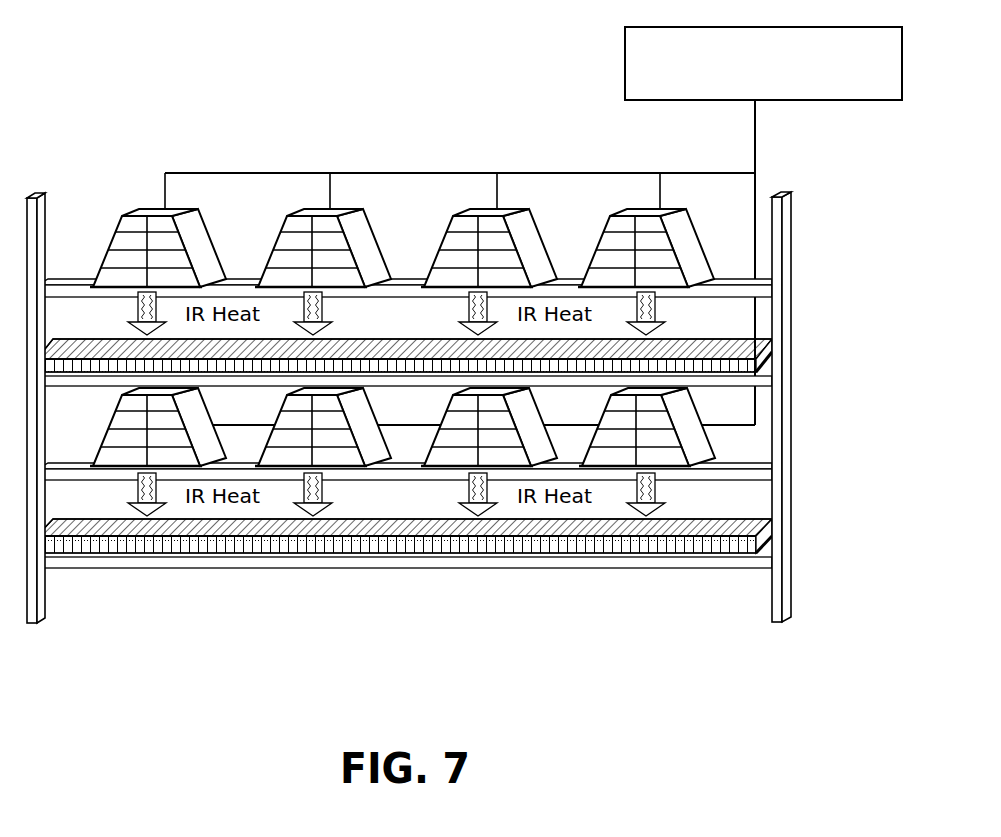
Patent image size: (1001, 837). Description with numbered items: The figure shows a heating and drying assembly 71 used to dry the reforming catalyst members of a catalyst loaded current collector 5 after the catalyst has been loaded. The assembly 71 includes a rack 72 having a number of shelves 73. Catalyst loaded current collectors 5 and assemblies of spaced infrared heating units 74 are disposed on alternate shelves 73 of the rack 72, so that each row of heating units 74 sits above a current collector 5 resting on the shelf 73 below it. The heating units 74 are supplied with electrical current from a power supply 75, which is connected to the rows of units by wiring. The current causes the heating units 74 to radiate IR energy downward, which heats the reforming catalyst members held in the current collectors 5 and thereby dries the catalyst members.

The catalyst loaded current collector 5 is at (763, 360).
The heating and drying assembly 71 is at (217, 150).
The rack 72 is at (790, 255).
The shelves 73 is at (753, 385).
The infrared heating unit 74 is at (278, 223).
The power supply 75 is at (640, 58).